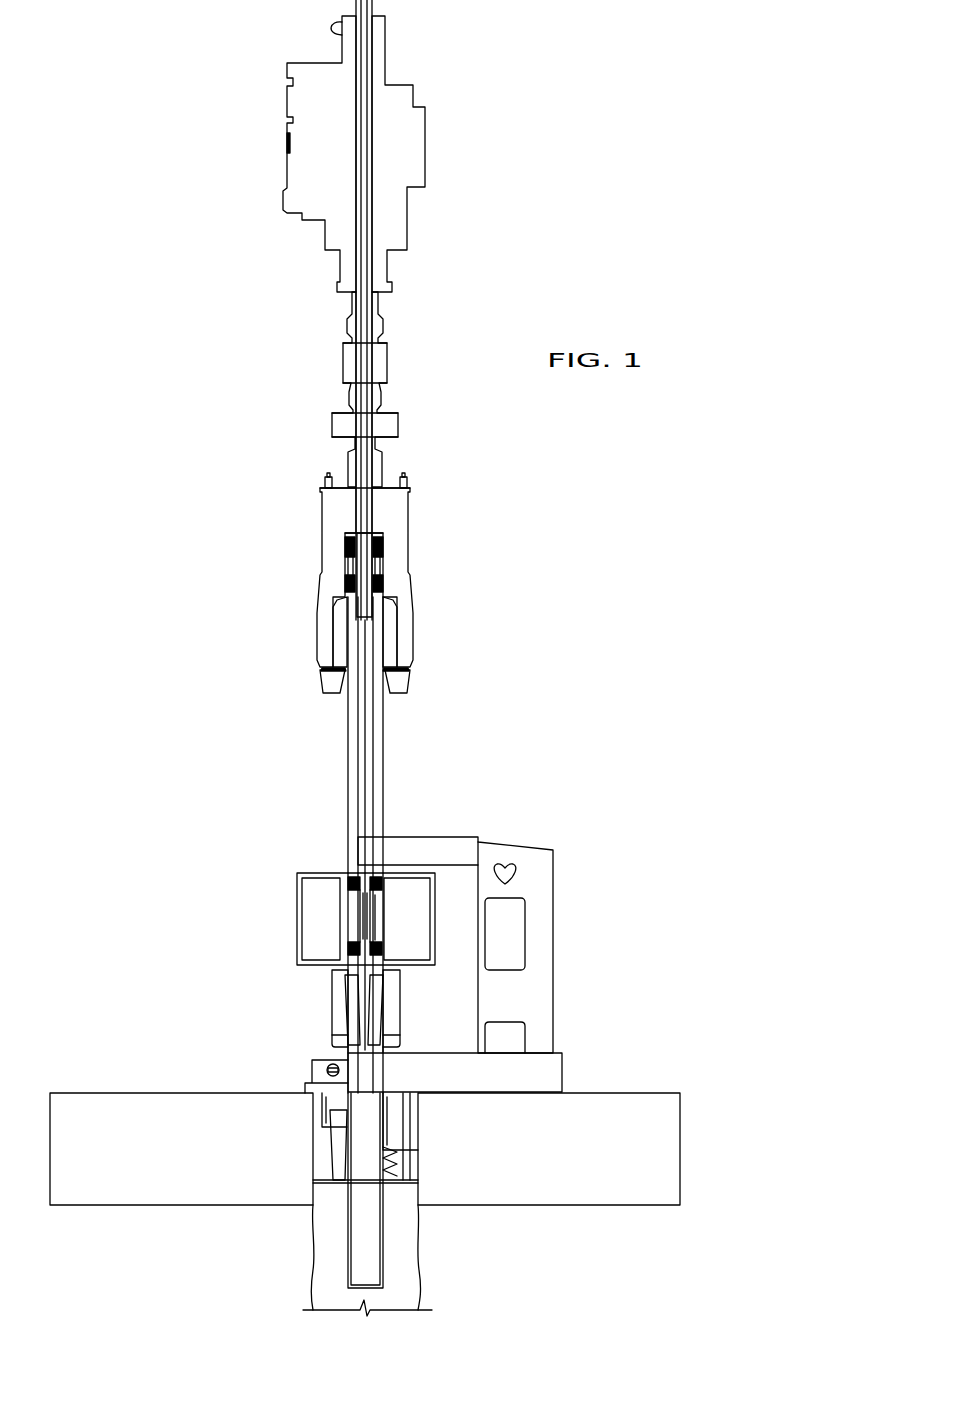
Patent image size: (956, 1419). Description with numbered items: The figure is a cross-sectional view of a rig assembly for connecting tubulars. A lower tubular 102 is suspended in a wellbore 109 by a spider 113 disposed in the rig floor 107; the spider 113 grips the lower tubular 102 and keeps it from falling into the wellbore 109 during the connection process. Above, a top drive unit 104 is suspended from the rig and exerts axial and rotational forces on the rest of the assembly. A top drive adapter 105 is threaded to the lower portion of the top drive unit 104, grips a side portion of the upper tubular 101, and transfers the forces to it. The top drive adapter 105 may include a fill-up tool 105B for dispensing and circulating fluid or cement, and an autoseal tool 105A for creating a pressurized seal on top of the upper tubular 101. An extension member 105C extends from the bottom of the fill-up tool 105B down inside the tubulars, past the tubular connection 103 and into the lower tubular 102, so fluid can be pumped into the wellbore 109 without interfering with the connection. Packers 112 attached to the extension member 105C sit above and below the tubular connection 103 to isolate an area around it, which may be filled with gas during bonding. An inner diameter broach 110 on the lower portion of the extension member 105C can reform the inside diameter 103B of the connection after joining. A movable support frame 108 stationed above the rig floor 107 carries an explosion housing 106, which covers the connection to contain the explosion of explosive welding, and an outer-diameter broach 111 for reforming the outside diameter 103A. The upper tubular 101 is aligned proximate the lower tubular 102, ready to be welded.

The upper tubular 101 is at (347, 740).
The lower tubular 102 is at (387, 1233).
The tubular connection 103 is at (334, 900).
The outside diameter 103A is at (350, 917).
The inside diameter 103B is at (377, 923).
The top drive unit 104 is at (403, 141).
The top drive adapter 105 is at (290, 537).
The autoseal tool 105A is at (333, 601).
The fill-up tool 105B is at (345, 588).
The extension member 105C is at (358, 697).
The explosion housing 106 is at (297, 947).
The rig floor 107 is at (628, 1092).
The movable support frame 108 is at (542, 993).
The wellbore 109 is at (328, 1290).
The inner diameter broach 110 is at (332, 1007).
The outer-diameter broach 111 is at (332, 1035).
The packers 112 is at (371, 877).
The spider 113 is at (337, 1138).